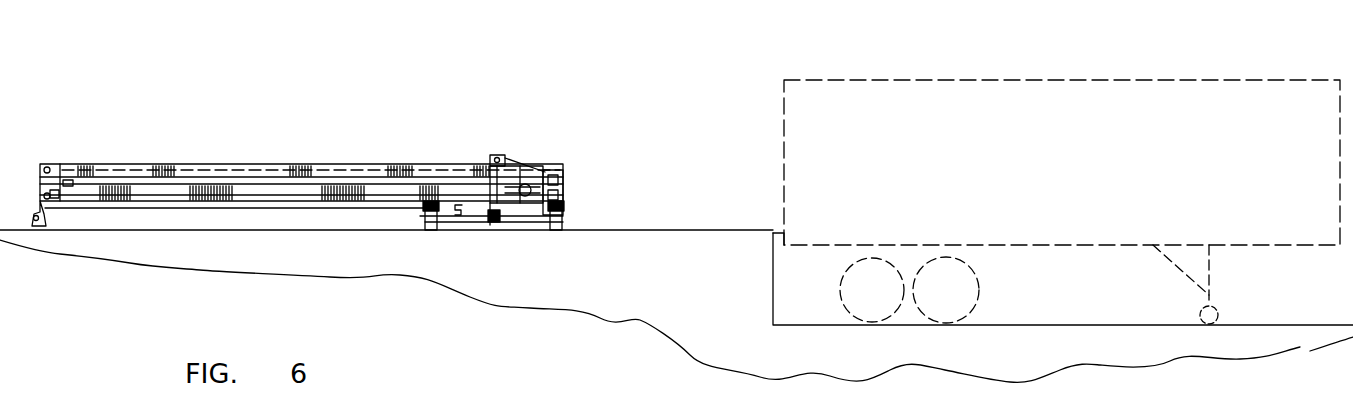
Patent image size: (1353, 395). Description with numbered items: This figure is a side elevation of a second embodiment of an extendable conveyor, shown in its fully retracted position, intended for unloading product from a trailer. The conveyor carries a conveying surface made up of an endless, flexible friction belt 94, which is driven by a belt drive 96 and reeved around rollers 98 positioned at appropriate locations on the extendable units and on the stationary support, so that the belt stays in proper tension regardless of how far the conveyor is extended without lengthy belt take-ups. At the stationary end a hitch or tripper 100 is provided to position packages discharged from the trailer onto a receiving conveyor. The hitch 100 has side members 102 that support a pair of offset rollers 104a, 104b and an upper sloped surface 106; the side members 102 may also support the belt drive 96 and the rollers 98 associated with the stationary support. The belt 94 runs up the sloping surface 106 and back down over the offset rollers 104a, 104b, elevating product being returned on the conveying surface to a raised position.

The upper sloped surface 106 is at (490, 158).
The offset roller 104a is at (496, 162).
The offset roller 104b is at (520, 162).
The hitch or tripper 100 is at (526, 150).
The side members 102 is at (546, 168).
The friction belt 94 is at (548, 172).
The belt drive 96 is at (500, 216).
The rollers 98 is at (512, 205).